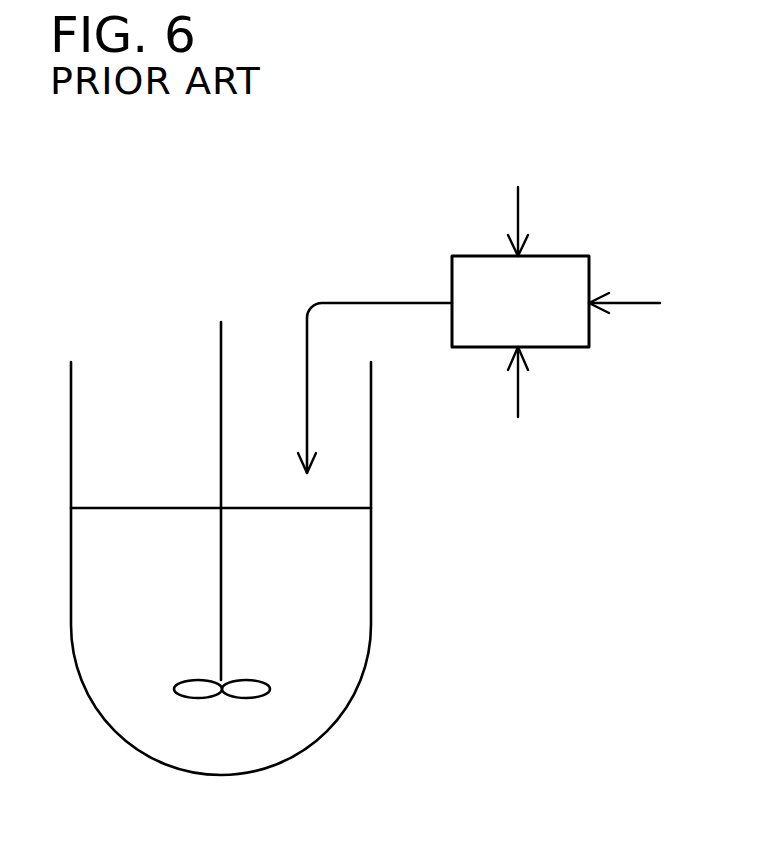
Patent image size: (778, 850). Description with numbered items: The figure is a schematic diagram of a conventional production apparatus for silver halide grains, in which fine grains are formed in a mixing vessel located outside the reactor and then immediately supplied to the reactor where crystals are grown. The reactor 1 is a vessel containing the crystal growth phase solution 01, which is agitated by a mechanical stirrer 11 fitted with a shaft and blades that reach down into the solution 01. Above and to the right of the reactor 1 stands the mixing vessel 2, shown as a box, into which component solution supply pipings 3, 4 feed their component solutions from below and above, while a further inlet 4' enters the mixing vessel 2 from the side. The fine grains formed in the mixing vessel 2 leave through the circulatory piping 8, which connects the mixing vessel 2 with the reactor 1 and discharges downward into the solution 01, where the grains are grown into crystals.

The reactor 1 is at (371, 543).
The crystal growth phase solution 01 is at (338, 627).
The mechanical stirrer 11 is at (221, 402).
The circulatory piping 8 is at (379, 302).
The mixing vessel 2 is at (558, 256).
The component solution supply piping 4 is at (518, 202).
The component solution supply piping 3 is at (518, 406).
The additional reactant supply 4' is at (640, 300).